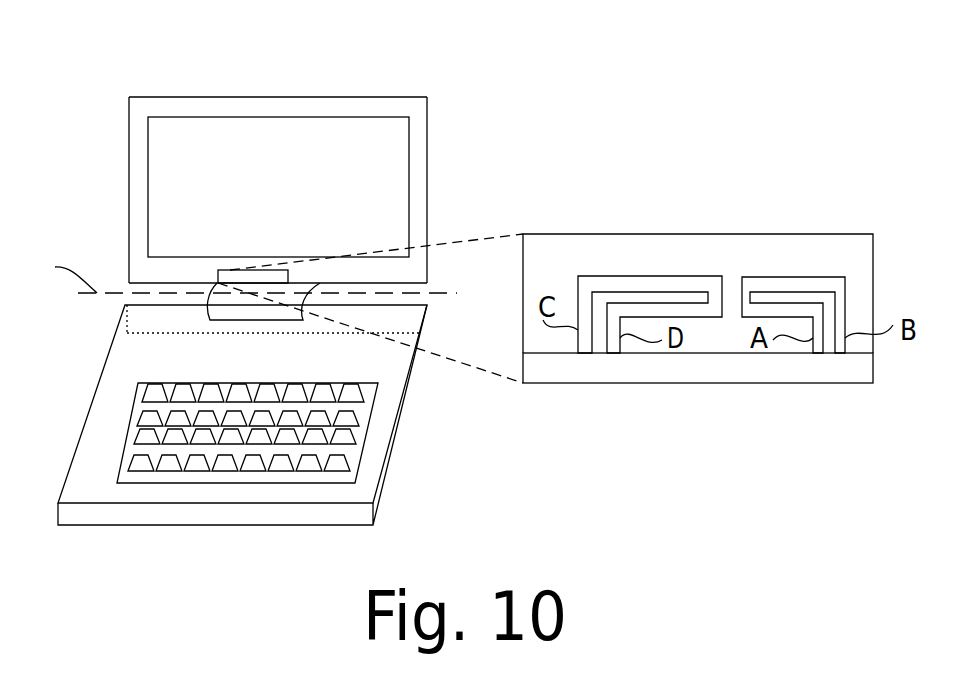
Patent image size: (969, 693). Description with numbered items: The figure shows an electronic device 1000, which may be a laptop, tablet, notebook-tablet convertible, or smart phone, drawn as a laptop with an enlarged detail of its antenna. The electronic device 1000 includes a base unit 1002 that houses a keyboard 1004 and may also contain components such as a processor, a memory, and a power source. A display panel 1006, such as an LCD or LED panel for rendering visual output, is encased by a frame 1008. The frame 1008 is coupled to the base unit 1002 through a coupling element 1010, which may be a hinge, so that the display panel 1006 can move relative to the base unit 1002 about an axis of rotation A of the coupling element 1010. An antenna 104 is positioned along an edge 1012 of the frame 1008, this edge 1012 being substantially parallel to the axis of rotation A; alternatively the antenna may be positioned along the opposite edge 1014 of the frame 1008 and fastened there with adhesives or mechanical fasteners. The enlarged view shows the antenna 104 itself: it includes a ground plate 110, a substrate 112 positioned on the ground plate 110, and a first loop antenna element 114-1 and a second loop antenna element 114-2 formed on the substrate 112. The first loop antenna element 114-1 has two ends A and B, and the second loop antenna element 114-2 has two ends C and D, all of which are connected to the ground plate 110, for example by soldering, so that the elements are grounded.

The electronic device 1000 is at (180, 54).
The base unit 1002 is at (437, 425).
The keyboard 1004 is at (130, 472).
The display panel 1006 is at (180, 168).
The frame 1008 is at (417, 160).
The coupling element 1010 is at (207, 285).
The edge 1012 is at (358, 283).
The edge 1014 is at (323, 117).
The antenna 104 is at (262, 258).
The ground plate 110 is at (842, 383).
The substrate 112 is at (873, 234).
The first loop antenna element 114-1 is at (845, 277).
The second loop antenna element 114-2 is at (637, 276).